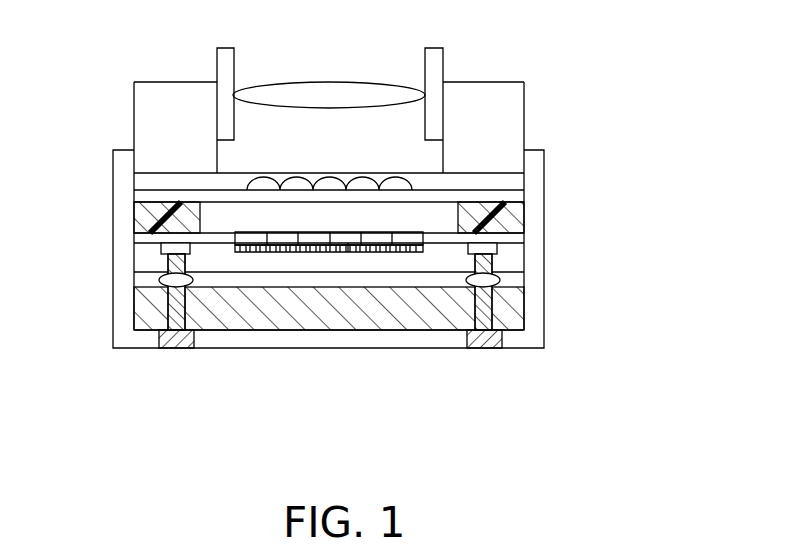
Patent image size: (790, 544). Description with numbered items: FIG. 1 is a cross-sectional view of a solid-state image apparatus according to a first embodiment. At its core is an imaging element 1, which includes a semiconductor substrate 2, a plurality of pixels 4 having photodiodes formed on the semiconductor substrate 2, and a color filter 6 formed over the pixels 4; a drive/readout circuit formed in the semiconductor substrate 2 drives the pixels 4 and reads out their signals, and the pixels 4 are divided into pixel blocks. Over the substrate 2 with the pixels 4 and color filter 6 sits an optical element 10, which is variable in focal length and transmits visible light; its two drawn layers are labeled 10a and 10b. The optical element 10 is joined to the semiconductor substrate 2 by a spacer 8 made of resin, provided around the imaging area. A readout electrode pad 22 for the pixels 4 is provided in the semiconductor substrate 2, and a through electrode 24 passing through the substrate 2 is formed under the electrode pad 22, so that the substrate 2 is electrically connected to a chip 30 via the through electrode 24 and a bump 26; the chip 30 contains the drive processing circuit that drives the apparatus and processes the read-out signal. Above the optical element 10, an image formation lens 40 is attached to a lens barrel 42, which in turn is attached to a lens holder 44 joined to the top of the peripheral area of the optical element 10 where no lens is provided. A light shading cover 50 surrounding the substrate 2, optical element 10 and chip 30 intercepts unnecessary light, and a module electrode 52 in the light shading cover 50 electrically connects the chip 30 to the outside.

The imaging element 1 is at (396, 341).
The semiconductor substrate 2 is at (510, 257).
The pixels 4 is at (407, 243).
The color filter 6 is at (349, 252).
The spacer 8 is at (137, 210).
The optical element 10 is at (640, 85).
The lower spacer layer 10a is at (402, 200).
The upper spacer layer 10b is at (418, 178).
The readout electrode pad 22 is at (148, 236).
The through electrode 24 is at (167, 258).
The bump 26 is at (160, 281).
The chip 30 is at (140, 320).
The image formation lens 40 is at (307, 93).
The lens barrel 42 is at (222, 59).
The lens holder 44 is at (145, 125).
The light shading cover 50 is at (132, 340).
The module electrode 52 is at (172, 345).